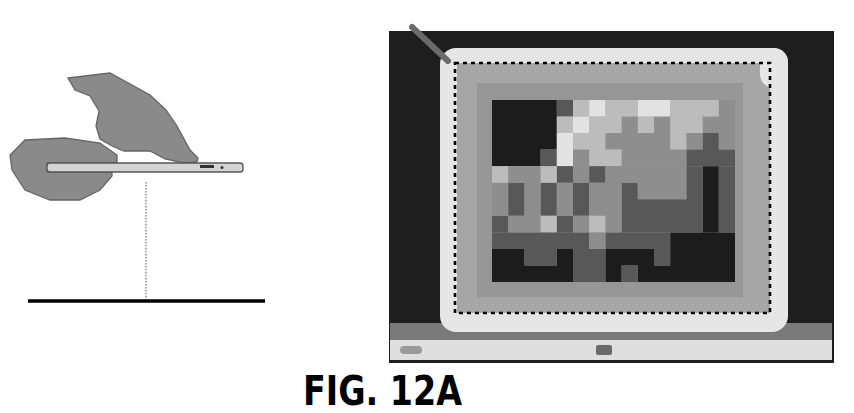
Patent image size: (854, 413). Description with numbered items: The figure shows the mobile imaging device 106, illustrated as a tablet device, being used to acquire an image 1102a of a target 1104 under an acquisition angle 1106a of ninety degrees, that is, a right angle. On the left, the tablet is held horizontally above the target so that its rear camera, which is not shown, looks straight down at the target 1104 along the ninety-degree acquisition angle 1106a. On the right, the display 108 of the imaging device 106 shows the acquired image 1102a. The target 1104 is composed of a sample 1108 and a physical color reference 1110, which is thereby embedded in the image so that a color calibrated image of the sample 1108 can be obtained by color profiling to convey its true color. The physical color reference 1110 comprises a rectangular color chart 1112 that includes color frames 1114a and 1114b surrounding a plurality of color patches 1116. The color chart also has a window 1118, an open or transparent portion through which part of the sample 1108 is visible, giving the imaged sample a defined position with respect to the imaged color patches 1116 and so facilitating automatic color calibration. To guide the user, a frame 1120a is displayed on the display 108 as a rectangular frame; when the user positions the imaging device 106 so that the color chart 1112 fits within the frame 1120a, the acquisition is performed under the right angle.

The mobile imaging device 106 is at (242, 162).
The target 1104 is at (218, 299).
The acquisition angle 1106a is at (146, 299).
The image 1102a is at (386, 70).
The display 108 is at (390, 153).
The sample 1108 is at (437, 210).
The physical color reference 1110 is at (455, 138).
The color chart 1112 is at (788, 178).
The color frame 1114a is at (792, 72).
The color frame 1114b is at (455, 94).
The color patches 1116 is at (735, 226).
The window 1118 is at (494, 99).
The frame 1120a is at (455, 296).